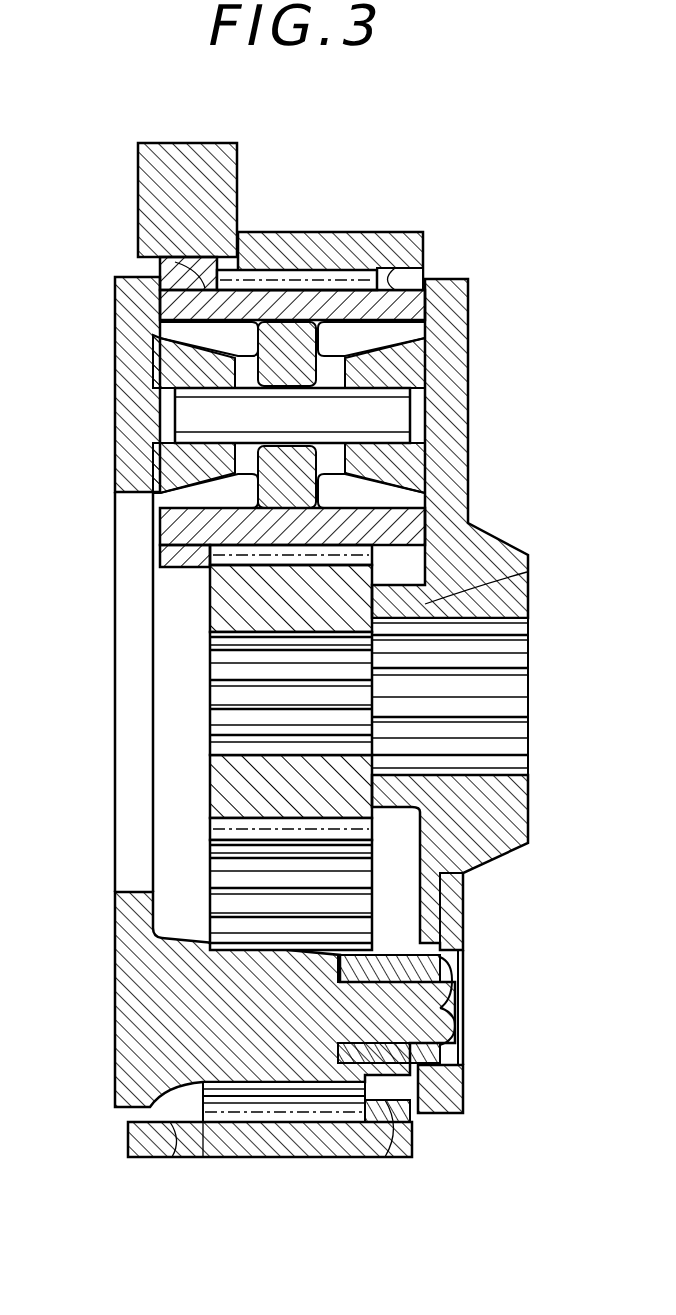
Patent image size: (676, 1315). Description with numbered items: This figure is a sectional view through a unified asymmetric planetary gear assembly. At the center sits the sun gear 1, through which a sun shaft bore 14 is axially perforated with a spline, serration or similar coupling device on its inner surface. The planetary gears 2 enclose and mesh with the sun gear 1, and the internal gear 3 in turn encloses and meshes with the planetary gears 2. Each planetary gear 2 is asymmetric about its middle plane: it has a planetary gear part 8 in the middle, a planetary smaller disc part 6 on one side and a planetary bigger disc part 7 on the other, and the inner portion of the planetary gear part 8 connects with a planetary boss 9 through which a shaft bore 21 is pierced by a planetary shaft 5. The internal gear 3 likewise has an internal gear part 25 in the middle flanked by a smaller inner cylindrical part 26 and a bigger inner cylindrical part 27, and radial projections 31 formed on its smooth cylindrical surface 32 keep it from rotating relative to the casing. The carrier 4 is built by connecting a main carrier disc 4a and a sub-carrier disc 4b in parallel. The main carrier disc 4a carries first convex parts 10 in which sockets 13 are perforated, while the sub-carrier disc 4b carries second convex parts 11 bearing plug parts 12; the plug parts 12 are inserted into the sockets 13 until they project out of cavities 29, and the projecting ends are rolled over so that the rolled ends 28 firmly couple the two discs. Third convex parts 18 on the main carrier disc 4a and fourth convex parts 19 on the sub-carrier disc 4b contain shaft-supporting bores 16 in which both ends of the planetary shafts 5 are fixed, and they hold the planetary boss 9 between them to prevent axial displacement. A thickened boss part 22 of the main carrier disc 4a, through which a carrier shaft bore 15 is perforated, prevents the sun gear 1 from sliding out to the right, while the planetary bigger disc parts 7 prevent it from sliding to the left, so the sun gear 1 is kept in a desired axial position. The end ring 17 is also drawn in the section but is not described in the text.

The sun gear 1 is at (230, 797).
The planetary gears 2 is at (512, 265).
The internal gear 3 is at (279, 675).
The carrier 4 is at (485, 920).
The main carrier disc 4a is at (478, 872).
The sub-carrier disc 4b is at (465, 888).
The planetary shafts 5 is at (137, 447).
The planetary smaller disc part 6 is at (430, 300).
The planetary bigger disc part 7 is at (425, 358).
The planetary gear part 8 is at (425, 330).
The planetary boss 9 is at (425, 388).
The first convex parts 10 is at (458, 1090).
The second convex parts 11 is at (250, 990).
The plug part 12 is at (445, 1013).
The socket 13 is at (445, 960).
The sun shaft bore 14 is at (230, 692).
The carrier shaft bore 15 is at (483, 723).
The shaft-supporting bores 16 is at (198, 416).
The end ring 17 is at (415, 878).
The third convex parts 18 is at (455, 448).
The fourth convex parts 19 is at (135, 348).
The shaft bore 21 is at (420, 482).
The boss part 22 is at (527, 572).
The internal gear part 25 is at (291, 698).
The smaller inner cylindrical part 26 is at (423, 275).
The bigger inner cylindrical part 27 is at (195, 262).
The rolled ends 28 is at (448, 976).
The cavities 29 is at (458, 1062).
The radial projections 31 is at (219, 165).
The smooth cylindrical surface 32 is at (298, 232).